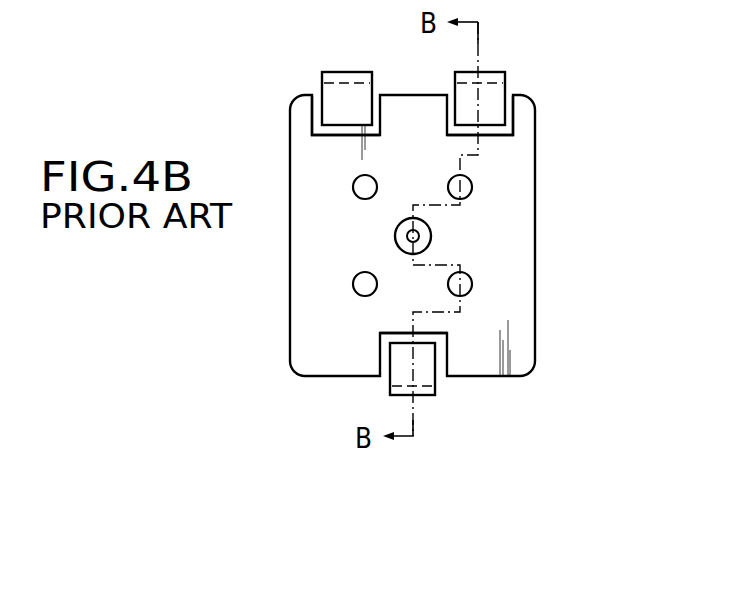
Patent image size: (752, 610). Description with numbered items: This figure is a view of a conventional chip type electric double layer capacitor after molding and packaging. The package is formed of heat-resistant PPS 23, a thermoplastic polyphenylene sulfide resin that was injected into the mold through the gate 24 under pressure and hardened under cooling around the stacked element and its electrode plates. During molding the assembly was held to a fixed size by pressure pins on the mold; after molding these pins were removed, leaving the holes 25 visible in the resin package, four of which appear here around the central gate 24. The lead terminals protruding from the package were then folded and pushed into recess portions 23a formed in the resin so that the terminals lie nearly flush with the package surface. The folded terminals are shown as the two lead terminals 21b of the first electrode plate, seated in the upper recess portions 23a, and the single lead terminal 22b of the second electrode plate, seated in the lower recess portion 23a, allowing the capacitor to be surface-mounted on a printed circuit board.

The lead terminal 21b is at (350, 72).
The lead terminal 22b is at (435, 397).
The heat-resistant PPS 23 is at (530, 135).
The recess portion 23a is at (318, 95).
The gate 24 is at (405, 217).
The hole 25 is at (353, 187).